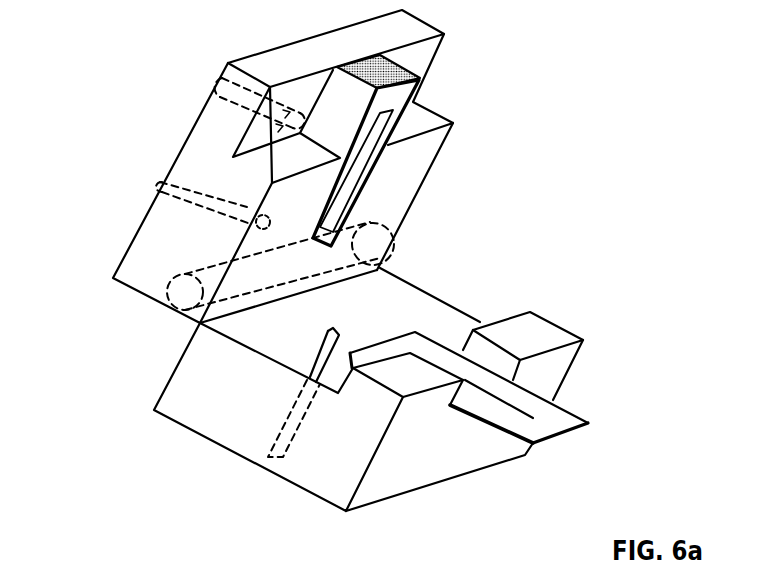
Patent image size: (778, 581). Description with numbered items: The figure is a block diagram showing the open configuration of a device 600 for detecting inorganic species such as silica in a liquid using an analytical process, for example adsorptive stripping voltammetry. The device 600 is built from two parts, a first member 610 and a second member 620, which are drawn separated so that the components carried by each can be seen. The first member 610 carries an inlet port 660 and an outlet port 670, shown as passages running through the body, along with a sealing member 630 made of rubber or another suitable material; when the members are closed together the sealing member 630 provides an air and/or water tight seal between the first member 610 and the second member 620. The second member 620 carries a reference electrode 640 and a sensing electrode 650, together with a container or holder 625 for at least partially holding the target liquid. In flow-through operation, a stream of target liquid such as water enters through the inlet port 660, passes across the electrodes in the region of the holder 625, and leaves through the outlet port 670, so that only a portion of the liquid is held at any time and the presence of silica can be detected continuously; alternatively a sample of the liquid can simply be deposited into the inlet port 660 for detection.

The device 600 is at (636, 95).
The first member 610 is at (120, 36).
The second member 620 is at (123, 322).
The container 625 is at (450, 338).
The sealing member 630 is at (422, 88).
The reference electrode 640 is at (340, 337).
The sensing electrode 650 is at (567, 410).
The inlet port 660 is at (166, 190).
The outlet port 670 is at (225, 80).